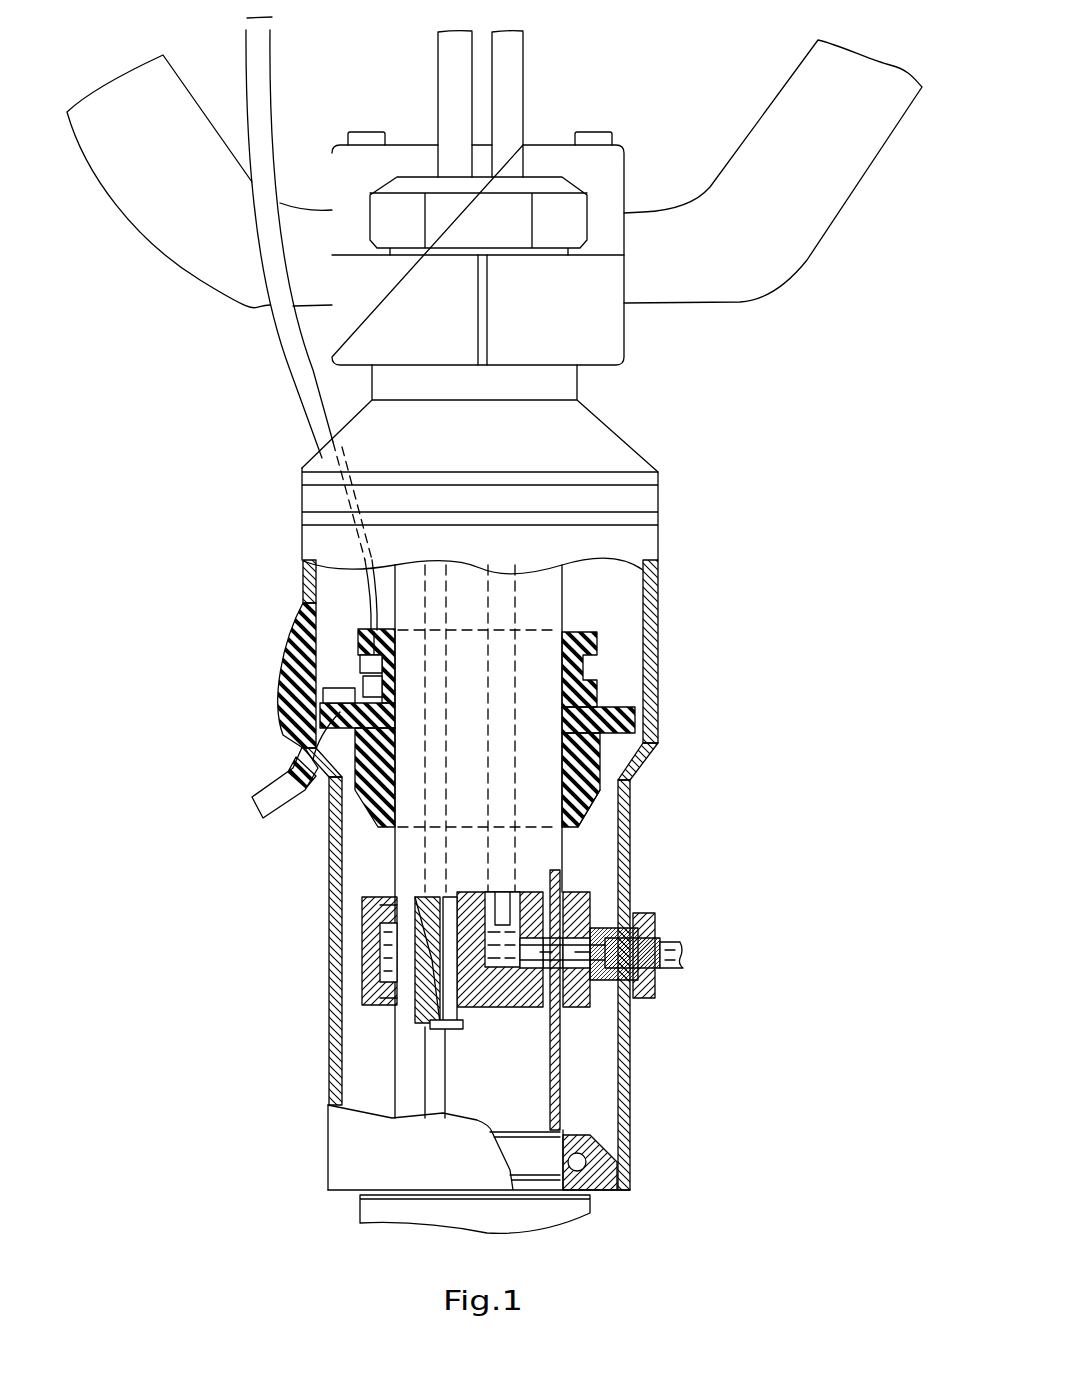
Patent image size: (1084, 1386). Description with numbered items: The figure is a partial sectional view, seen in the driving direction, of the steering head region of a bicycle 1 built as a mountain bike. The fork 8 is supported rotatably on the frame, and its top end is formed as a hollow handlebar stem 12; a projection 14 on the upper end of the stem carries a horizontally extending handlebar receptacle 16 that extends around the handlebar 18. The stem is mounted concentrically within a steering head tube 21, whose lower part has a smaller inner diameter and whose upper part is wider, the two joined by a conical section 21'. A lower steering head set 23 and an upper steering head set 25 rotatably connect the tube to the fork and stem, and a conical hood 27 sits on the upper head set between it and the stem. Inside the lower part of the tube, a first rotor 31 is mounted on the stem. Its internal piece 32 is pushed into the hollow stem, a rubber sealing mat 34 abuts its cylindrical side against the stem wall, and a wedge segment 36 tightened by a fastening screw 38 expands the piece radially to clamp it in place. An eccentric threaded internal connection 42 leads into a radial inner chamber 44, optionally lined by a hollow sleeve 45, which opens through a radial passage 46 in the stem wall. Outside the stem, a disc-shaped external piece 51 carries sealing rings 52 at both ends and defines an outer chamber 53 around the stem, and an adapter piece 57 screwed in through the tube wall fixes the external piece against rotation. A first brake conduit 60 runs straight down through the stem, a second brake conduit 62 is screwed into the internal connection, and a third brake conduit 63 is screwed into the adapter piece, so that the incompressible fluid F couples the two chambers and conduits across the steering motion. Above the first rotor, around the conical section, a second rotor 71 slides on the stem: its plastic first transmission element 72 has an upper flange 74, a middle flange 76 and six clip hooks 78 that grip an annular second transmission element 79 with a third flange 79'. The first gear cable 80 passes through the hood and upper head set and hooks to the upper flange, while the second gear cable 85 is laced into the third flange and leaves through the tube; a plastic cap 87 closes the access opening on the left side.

The bicycle 1 is at (280, 615).
The fork 8 is at (356, 1208).
The handlebar stem 12 is at (563, 597).
The projection 14 is at (502, 302).
The handlebar receptacle 16 is at (597, 188).
The handlebar 18 is at (788, 145).
The steering head tube 21 is at (712, 852).
The conical section 21' is at (718, 771).
The lower steering head set 23 is at (608, 1192).
The upper steering head set 25 is at (642, 500).
The conical hood 27 is at (578, 445).
The first rotor 31 is at (593, 905).
The internal piece 32 is at (528, 1012).
The sealing mat 34 is at (563, 1010).
The wedge segment 36 is at (440, 1005).
The fastening screw 38 is at (445, 1015).
The internal connection 42 is at (515, 895).
The inner chamber 44 is at (520, 1010).
The hollow sleeve 45 is at (600, 892).
The passage 46 is at (592, 983).
The external piece 51 is at (373, 935).
The sealing ring 52 is at (363, 905).
The outer chamber 53 is at (387, 960).
The adapter piece 57 is at (637, 997).
The first brake conduit 60 is at (457, 93).
The second brake conduit 62 is at (510, 87).
The third brake conduit 63 is at (670, 958).
The second rotor 71 is at (383, 832).
The first transmission element 72 is at (365, 803).
The upper flange 74 is at (600, 642).
The middle flange 76 is at (590, 695).
The clip hooks 78 is at (578, 803).
The second transmission element 79 is at (697, 776).
The third flange 79' is at (699, 747).
The first gear cable 80 is at (363, 590).
The second gear cable 85 is at (287, 725).
The cap 87 is at (283, 678).
The incompressible fluid F is at (682, 942).